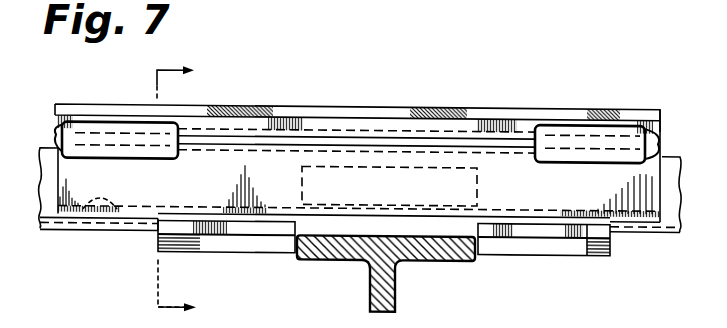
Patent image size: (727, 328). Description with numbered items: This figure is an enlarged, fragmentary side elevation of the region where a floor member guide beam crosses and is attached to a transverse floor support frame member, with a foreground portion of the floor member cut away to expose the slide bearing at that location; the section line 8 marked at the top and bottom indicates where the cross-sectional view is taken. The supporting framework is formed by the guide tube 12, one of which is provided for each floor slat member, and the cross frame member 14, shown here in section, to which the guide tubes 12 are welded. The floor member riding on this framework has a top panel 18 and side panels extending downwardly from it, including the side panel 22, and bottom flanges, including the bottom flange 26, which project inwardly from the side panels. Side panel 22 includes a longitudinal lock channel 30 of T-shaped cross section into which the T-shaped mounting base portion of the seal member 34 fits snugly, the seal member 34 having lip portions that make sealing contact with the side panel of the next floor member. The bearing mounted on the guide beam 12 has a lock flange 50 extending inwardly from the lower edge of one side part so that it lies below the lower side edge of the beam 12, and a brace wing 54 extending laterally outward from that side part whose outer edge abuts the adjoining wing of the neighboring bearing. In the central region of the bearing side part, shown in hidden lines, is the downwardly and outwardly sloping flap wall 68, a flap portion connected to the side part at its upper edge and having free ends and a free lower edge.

The guide tube 12 is at (668, 212).
The cross frame member 14 is at (433, 253).
The top panel 18 is at (386, 108).
The side panel 22 is at (577, 191).
The bottom flange 26 is at (115, 226).
The longitudinal lock channel 30 is at (243, 140).
The seal member 34 is at (587, 136).
The lock flange 50 is at (242, 245).
The brace wing 54 is at (532, 225).
The flap wall 68 is at (300, 172).
The section line 8- 8 is at (187, 191).